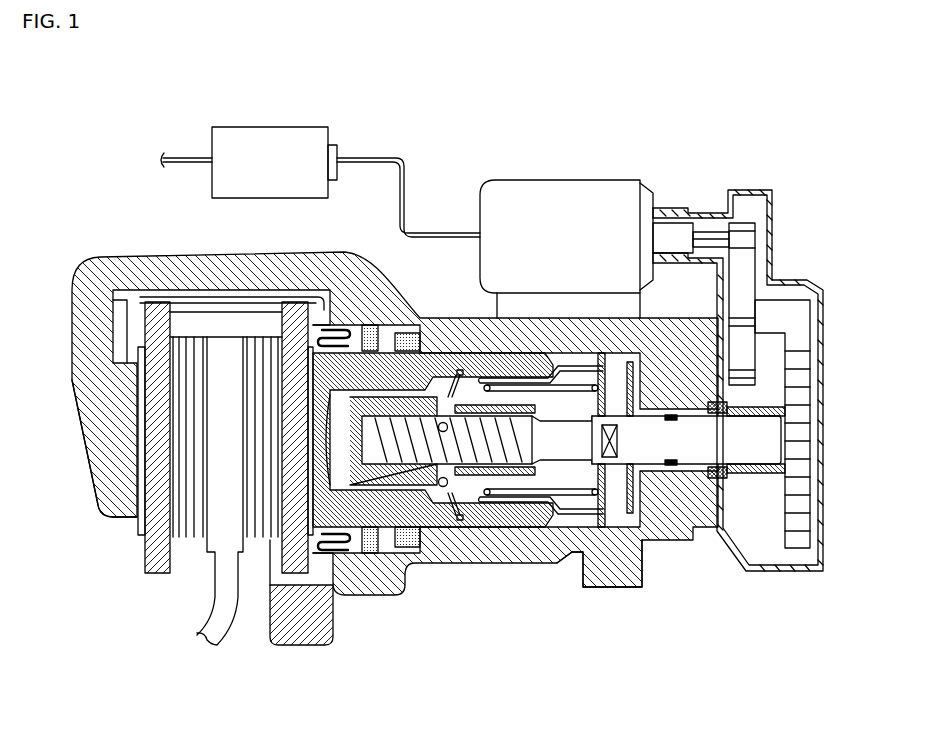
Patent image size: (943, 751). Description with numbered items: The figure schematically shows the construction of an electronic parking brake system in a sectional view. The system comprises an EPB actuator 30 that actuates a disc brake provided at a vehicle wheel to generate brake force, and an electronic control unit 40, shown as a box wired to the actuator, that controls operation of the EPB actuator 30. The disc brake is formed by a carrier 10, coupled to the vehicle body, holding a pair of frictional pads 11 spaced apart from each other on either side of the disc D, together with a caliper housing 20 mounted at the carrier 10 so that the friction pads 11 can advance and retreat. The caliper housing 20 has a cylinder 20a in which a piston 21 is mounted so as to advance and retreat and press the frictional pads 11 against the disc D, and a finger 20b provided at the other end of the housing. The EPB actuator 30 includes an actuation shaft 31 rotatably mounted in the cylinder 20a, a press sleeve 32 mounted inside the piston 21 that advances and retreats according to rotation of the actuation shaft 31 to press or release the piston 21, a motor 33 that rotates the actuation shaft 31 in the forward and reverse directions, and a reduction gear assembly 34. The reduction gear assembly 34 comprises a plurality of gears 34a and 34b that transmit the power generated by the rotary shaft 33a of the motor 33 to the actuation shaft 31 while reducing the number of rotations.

The carrier 10 is at (243, 506).
The frictional pads 11 is at (143, 549).
The caliper housing 20 is at (382, 412).
The cylinder 20a is at (555, 530).
The finger 20b is at (107, 498).
The piston 21 is at (432, 488).
The EPB actuator 30 is at (677, 336).
The actuation shaft 31 is at (457, 455).
The press sleeve 32 is at (390, 475).
The motor 33 is at (557, 178).
The rotary shaft 33a is at (710, 236).
The reduction gear assembly 34 is at (824, 389).
The gear 34a is at (745, 277).
The gear 34b is at (801, 352).
The electronic control unit 40 is at (242, 125).
The disc D is at (206, 612).